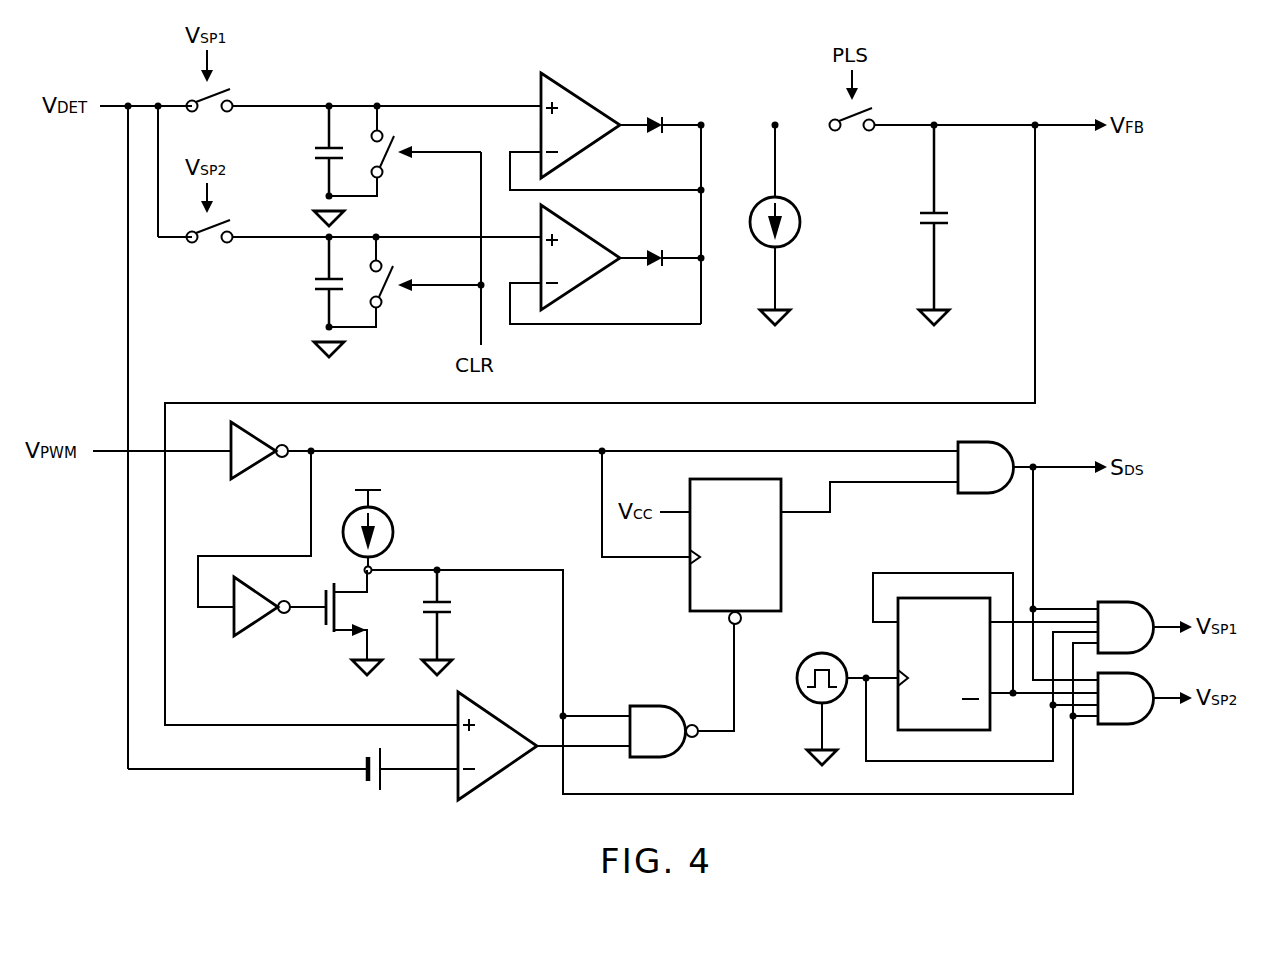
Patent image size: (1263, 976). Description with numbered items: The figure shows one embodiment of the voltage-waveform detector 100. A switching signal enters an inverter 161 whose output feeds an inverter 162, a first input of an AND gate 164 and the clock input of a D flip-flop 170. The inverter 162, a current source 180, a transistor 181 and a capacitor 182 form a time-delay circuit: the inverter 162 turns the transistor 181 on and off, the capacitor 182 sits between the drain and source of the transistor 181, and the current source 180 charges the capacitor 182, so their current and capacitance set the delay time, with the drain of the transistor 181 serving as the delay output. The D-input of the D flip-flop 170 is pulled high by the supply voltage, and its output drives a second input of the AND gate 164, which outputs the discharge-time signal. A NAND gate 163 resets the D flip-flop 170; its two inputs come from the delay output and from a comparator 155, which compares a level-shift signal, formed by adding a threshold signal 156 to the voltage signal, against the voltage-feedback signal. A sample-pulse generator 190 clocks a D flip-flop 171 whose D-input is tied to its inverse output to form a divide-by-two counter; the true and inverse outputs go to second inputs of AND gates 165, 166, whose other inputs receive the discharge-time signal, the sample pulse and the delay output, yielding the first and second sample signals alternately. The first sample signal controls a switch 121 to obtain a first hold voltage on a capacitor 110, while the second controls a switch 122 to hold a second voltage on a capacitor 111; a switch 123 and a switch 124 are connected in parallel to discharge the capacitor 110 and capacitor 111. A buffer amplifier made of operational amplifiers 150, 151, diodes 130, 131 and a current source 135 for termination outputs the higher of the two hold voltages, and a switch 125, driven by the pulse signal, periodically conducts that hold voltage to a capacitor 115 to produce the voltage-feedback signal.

The voltage-waveform detector 100 is at (1179, 58).
The capacitor 110 is at (291, 151).
The capacitor 111 is at (291, 282).
The capacitor 115 is at (973, 217).
The switch 121 is at (244, 73).
The switch 122 is at (202, 262).
The switch 123 is at (405, 151).
The switch 124 is at (405, 286).
The switch 125 is at (859, 150).
The diode 130 is at (660, 93).
The diode 131 is at (660, 306).
The current source 135 is at (812, 217).
The operational amplifier 150 is at (585, 110).
The operational amplifier 151 is at (586, 294).
The comparator 155 is at (497, 730).
The threshold signal 156 is at (358, 799).
The inverter 161 is at (259, 476).
The inverter 162 is at (255, 636).
The NAND gate 163 is at (664, 703).
The AND gate 164 is at (989, 500).
The AND gate 165 is at (1131, 602).
The AND gate 166 is at (1130, 729).
The D flip-flop 170 is at (770, 551).
The D flip-flop 171 is at (944, 624).
The current source 180 is at (406, 519).
The transistor 181 is at (328, 630).
The capacitor 182 is at (476, 615).
The sample-pulse generator 190 is at (830, 674).